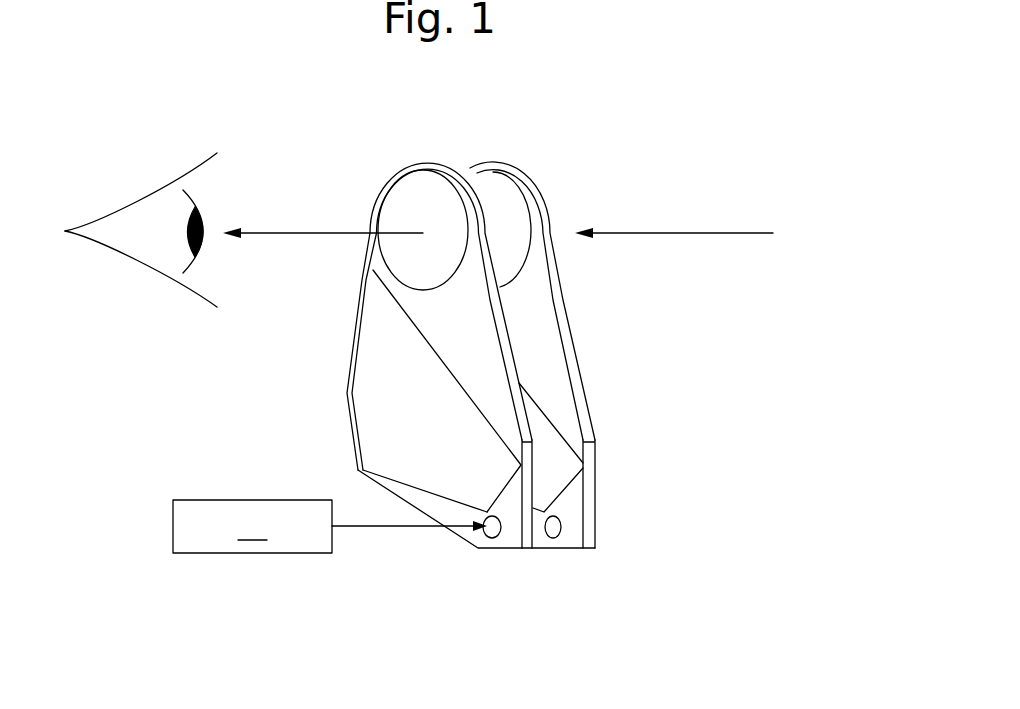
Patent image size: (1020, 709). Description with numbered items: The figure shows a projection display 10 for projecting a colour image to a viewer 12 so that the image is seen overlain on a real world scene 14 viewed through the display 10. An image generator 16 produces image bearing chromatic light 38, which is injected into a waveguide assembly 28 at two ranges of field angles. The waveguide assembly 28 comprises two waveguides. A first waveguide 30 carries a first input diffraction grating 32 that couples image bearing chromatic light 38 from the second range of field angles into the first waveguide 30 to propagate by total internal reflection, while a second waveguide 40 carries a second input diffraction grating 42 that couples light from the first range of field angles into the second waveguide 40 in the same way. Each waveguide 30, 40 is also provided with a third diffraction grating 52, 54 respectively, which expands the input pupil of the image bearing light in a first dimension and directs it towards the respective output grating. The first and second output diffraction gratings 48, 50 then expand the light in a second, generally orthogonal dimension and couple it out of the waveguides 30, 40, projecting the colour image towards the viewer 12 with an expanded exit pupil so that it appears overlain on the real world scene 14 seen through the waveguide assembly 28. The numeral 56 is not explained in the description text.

The projection display 10 is at (214, 596).
The viewer 12 is at (158, 230).
The real world scene 14 is at (683, 232).
The image generator 16 is at (252, 526).
The waveguide assembly 28 is at (604, 339).
The first waveguide 30 is at (410, 160).
The first input diffraction grating 32 is at (493, 536).
The image bearing chromatic light 38 is at (413, 532).
The second waveguide 40 is at (507, 160).
The second input diffraction grating 42 is at (558, 518).
The first output diffraction grating 48 is at (403, 213).
The second output diffraction grating 50 is at (508, 220).
The third diffraction grating 52 is at (405, 414).
The third diffraction grating 54 is at (547, 475).
The viewing axis 56 is at (333, 232).